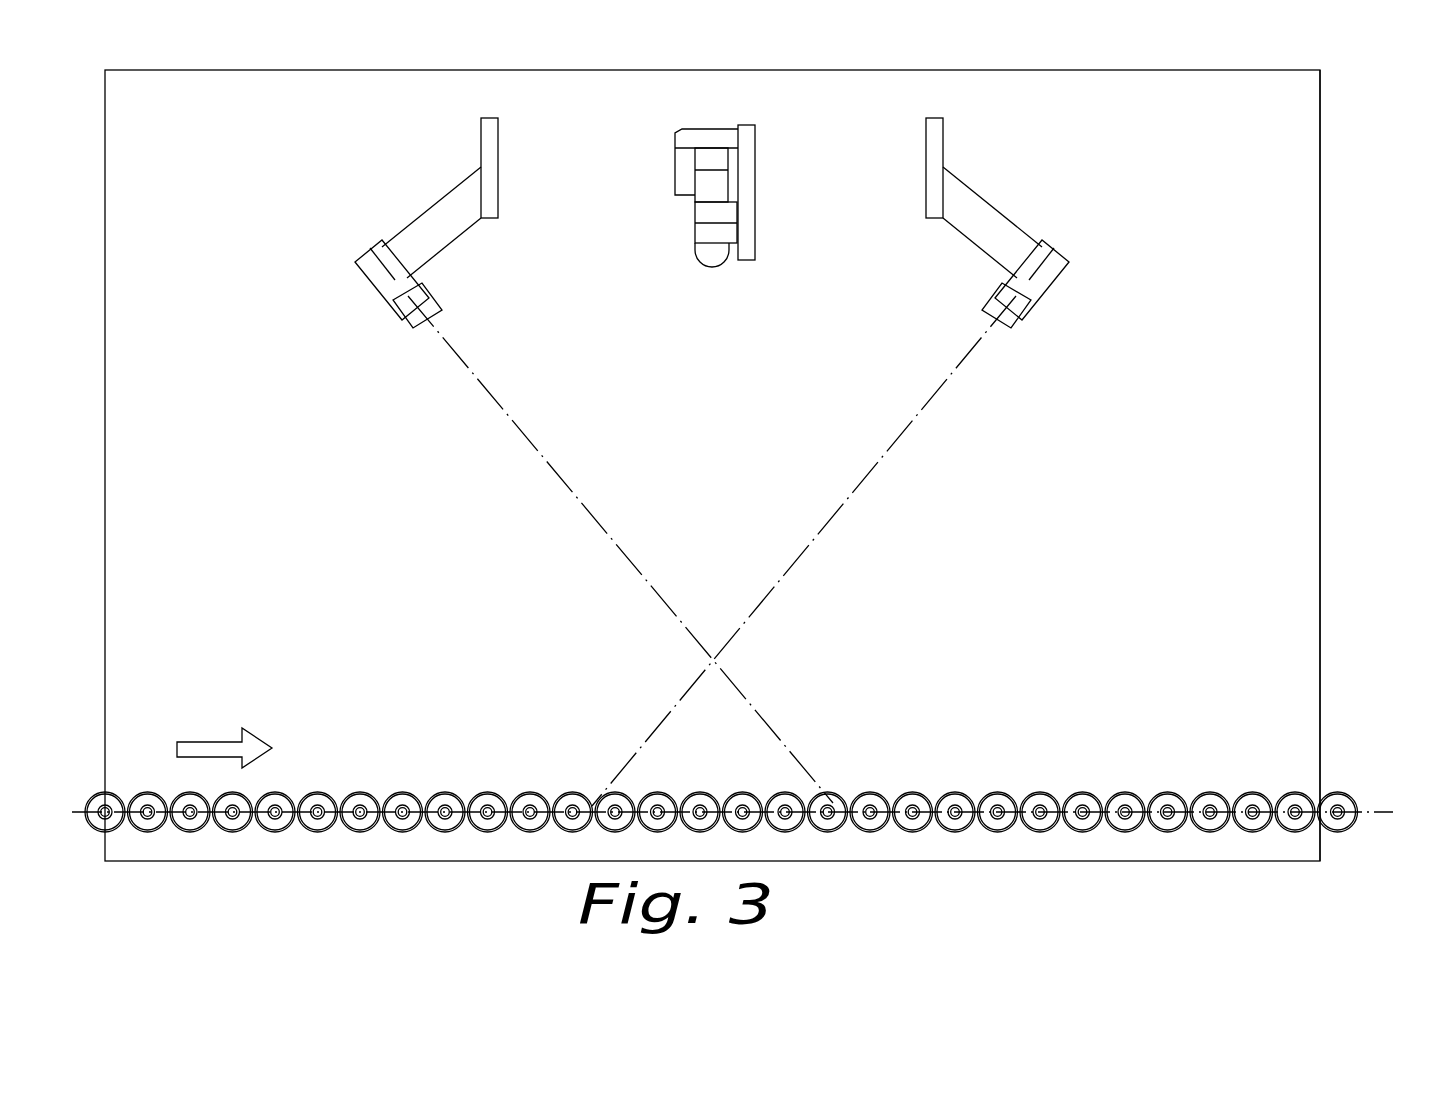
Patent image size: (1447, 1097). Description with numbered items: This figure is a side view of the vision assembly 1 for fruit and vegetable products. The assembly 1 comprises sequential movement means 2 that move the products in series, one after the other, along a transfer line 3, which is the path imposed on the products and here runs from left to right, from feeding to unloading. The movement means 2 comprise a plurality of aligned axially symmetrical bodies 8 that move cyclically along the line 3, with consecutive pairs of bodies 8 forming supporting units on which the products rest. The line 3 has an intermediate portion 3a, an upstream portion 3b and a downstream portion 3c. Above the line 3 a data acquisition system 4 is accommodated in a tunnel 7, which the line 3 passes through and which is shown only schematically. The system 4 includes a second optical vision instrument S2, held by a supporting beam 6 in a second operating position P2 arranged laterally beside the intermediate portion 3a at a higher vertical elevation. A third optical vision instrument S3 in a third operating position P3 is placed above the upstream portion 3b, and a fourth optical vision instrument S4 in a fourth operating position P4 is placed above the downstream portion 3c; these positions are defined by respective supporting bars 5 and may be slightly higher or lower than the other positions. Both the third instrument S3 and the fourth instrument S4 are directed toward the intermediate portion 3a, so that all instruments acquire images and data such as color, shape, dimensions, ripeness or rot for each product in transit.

The vision assembly 1 is at (1379, 204).
The sequential movement means 2 is at (732, 738).
The transfer line 3 is at (1380, 812).
The intermediate portion 3a is at (696, 787).
The upstream portion 3b is at (377, 777).
The downstream portion 3c is at (981, 786).
The data acquisition system 4 is at (1323, 108).
The supporting bar 5 is at (488, 132).
The supporting beam 6 is at (755, 213).
The tunnel 7 is at (1322, 482).
The axially symmetrical bodies 8 is at (398, 797).
The second operating position P2 is at (694, 237).
The third operating position P3 is at (545, 478).
The fourth operating position P4 is at (887, 486).
The second optical vision instrument S2 is at (698, 257).
The third optical vision instrument S3 is at (405, 322).
The fourth optical vision instrument S4 is at (1019, 322).